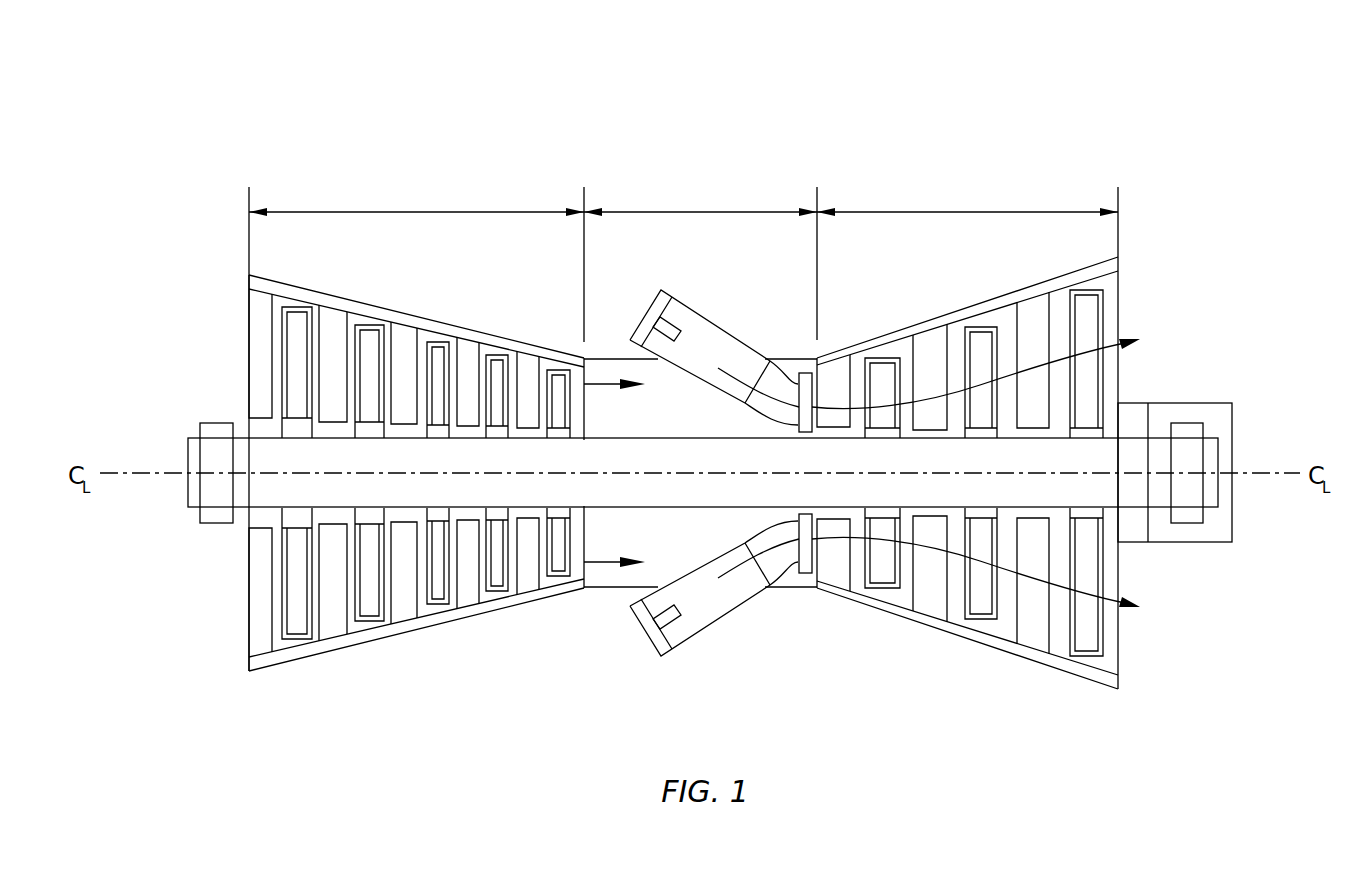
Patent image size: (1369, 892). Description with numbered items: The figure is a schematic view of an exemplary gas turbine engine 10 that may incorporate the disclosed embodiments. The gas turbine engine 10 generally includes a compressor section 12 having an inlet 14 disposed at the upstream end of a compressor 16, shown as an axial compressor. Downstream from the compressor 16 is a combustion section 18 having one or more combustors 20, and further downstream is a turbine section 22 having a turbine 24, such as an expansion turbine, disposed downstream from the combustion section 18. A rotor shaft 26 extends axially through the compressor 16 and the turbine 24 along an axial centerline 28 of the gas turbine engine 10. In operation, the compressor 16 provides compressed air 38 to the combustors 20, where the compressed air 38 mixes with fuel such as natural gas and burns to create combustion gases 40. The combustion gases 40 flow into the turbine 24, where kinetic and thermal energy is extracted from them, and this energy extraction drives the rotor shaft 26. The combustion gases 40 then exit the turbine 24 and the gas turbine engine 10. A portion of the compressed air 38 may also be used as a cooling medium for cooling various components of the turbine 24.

The gas turbine engine 10 is at (610, 118).
The compressor section 12 is at (418, 212).
The inlet 14 is at (248, 372).
The compressor 16 is at (266, 683).
The combustion section 18 is at (659, 212).
The combustor 20 is at (686, 304).
The turbine section 22 is at (904, 212).
The turbine 24 is at (944, 645).
The rotor shaft 26 is at (615, 452).
The axial centerline 28 is at (143, 470).
The compressed air 38 is at (597, 383).
The combustion gases 40 is at (1082, 356).